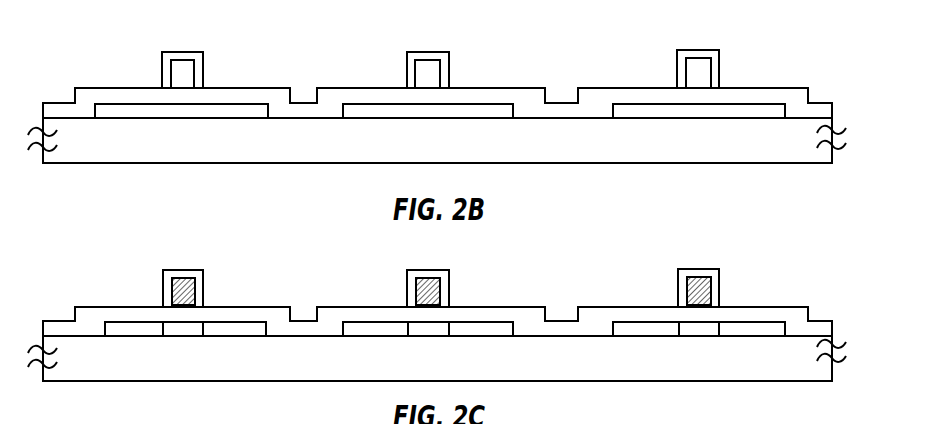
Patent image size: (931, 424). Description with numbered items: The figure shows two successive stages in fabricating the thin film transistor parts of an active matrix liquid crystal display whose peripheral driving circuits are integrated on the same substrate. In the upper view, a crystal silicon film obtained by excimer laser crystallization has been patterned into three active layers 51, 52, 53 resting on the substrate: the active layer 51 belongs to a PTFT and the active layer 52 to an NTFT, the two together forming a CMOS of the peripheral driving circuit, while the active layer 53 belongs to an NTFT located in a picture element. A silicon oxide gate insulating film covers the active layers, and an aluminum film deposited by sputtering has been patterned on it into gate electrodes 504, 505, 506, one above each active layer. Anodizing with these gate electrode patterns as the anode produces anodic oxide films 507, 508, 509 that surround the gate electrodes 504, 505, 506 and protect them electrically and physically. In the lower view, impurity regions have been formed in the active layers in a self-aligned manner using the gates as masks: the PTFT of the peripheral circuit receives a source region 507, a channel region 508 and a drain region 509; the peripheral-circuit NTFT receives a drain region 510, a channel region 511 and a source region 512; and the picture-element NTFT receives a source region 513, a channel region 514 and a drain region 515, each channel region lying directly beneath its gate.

In FIG. 2B, the active layer 51 is at (213, 108).
In FIG. 2B, the active layer 52 is at (459, 108).
In FIG. 2B, the active layer 53 is at (753, 108).
In FIG. 2B, the gate electrode 504 is at (183, 67).
In FIG. 2B, the gate electrode 505 is at (430, 65).
In FIG. 2B, the gate electrode 506 is at (702, 63).
In FIG. 2B, the anodic oxide film / source region 507 is at (184, 53).
In FIG. 2C, the anodic oxide film / source region 507 is at (124, 327).
In FIG. 2B, the anodic oxide film / channel region 508 is at (433, 53).
In FIG. 2C, the anodic oxide film / channel region 508 is at (170, 327).
In FIG. 2B, the anodic oxide film / drain region 509 is at (703, 51).
In FIG. 2C, the anodic oxide film / drain region 509 is at (224, 327).
In FIG. 2C, the drain region 510 is at (383, 327).
In FIG. 2C, the channel region 511 is at (417, 327).
In FIG. 2C, the source region 512 is at (490, 327).
In FIG. 2C, the source region 513 is at (655, 327).
In FIG. 2C, the channel region 514 is at (685, 327).
In FIG. 2C, the drain region 515 is at (748, 327).